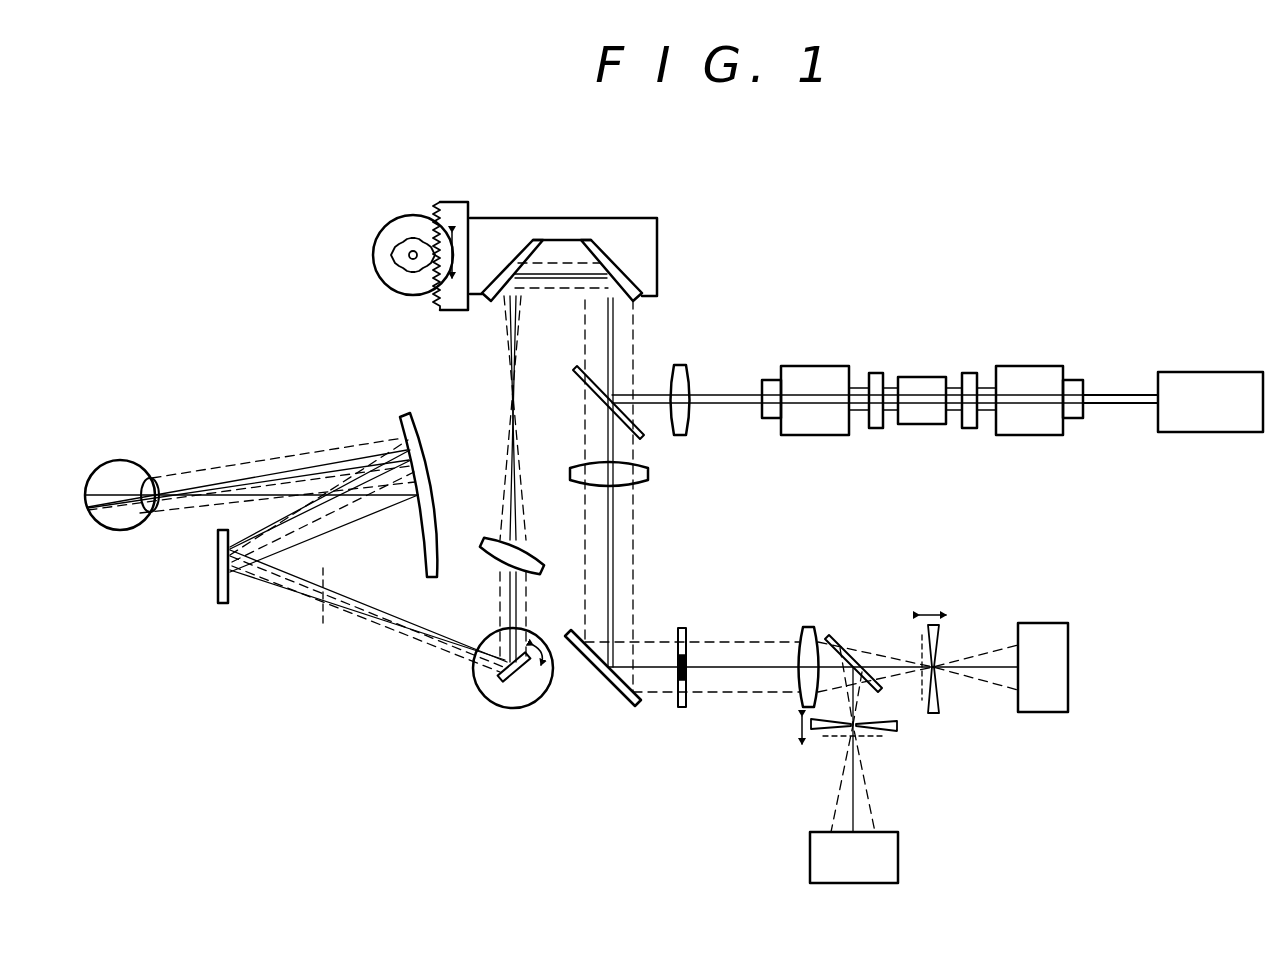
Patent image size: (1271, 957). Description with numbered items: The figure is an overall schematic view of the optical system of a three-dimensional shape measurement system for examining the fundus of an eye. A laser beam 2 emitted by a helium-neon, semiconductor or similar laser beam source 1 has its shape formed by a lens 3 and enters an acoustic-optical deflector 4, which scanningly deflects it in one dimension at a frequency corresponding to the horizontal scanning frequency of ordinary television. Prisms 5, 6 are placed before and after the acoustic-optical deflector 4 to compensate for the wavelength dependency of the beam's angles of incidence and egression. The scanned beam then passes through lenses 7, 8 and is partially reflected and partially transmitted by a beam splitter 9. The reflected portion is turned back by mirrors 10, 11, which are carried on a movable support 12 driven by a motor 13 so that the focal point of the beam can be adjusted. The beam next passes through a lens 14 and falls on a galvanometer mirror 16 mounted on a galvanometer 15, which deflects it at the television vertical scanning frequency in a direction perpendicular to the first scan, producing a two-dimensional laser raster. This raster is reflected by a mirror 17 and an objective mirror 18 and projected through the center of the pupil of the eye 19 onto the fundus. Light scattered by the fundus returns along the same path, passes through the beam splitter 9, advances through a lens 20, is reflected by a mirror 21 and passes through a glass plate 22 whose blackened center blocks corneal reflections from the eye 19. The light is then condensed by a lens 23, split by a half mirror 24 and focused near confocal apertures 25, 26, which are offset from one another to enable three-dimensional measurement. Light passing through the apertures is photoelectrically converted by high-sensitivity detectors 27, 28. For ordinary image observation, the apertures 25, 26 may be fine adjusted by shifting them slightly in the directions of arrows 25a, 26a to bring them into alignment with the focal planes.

The laser beam source 1 is at (1165, 418).
The laser beam 2 is at (1123, 397).
The lens 3 is at (1022, 372).
The acoustic-optical deflector 4 is at (920, 415).
The prism 5 is at (968, 422).
The prism 6 is at (877, 378).
The lens 7 is at (800, 372).
The lens 8 is at (680, 365).
The beam splitter 9 is at (640, 437).
The mirror 10 is at (597, 262).
The mirror 11 is at (525, 252).
The movable support 12 is at (457, 208).
The motor 13 is at (387, 240).
The lens 14 is at (490, 546).
The galvanometer 15 is at (485, 674).
The galvanometer mirror 16 is at (518, 676).
The mirror 17 is at (222, 592).
The objective mirror 18 is at (400, 420).
The eye 19 is at (122, 465).
The lens 20 is at (636, 478).
The mirror 21 is at (622, 703).
The glass plate 22 is at (683, 628).
The lens 23 is at (803, 632).
The half mirror 24 is at (845, 648).
The confocal aperture 25 is at (937, 713).
The arrow 25a is at (933, 613).
The confocal aperture 26 is at (893, 735).
The arrow 26a is at (800, 728).
The detector 27 is at (1042, 632).
The detector 28 is at (898, 853).